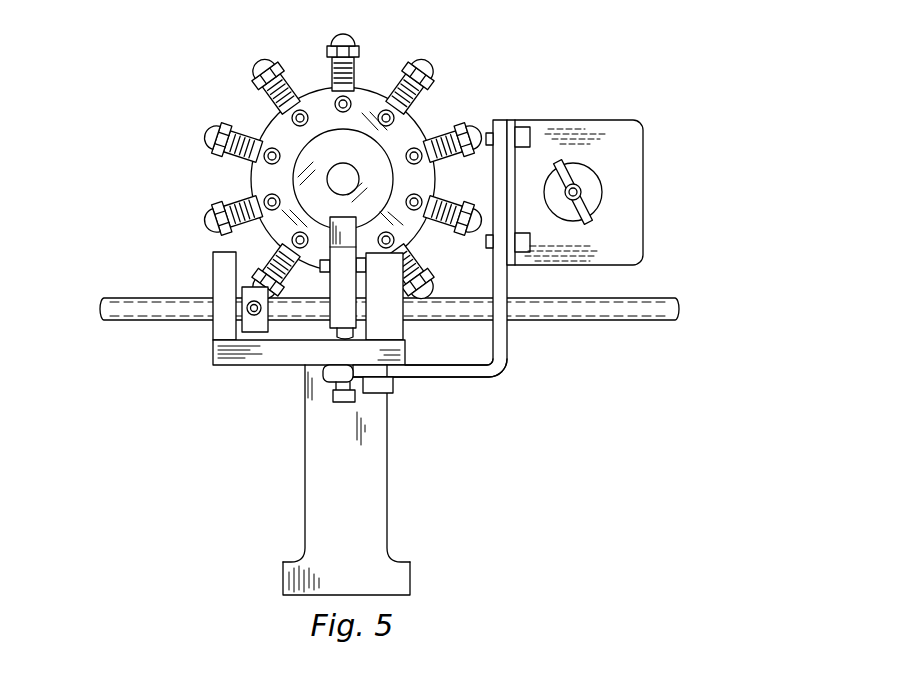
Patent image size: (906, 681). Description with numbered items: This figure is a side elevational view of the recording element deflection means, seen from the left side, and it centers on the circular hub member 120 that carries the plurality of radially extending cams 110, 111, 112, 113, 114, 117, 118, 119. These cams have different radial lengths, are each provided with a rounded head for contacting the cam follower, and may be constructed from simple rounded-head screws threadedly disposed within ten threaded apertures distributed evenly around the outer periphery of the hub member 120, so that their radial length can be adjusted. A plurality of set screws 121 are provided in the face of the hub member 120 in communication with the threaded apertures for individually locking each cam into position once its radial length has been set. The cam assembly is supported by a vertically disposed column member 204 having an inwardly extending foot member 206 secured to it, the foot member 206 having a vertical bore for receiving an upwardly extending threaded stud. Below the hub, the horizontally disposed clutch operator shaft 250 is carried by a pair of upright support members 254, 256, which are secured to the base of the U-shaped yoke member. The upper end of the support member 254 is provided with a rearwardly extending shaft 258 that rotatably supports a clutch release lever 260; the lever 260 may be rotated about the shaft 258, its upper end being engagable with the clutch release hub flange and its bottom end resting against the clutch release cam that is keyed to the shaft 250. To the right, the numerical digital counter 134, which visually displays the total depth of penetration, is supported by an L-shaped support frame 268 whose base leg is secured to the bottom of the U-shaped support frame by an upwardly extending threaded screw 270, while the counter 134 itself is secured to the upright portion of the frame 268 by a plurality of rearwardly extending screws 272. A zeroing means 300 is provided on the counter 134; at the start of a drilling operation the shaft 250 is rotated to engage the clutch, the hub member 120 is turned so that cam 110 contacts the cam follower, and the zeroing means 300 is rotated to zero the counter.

The radially extending cam 110 is at (340, 36).
The radially extending cam 111 is at (416, 62).
The radially extending cam 112 is at (466, 128).
The radially extending cam 113 is at (474, 213).
The radially extending cam 114 is at (428, 286).
The radially extending cam 117 is at (202, 222).
The radially extending cam 118 is at (202, 132).
The radially extending cam 119 is at (258, 63).
The circular hub member 120 is at (266, 120).
The set screw 121 is at (302, 110).
The numerical digital counter 134 is at (639, 121).
The column member 204 is at (318, 467).
The foot member 206 is at (288, 578).
The clutch operator shaft 250 is at (157, 322).
The upright support member 254 is at (405, 331).
The upright support member 256 is at (213, 276).
The rearwardly extending shaft 258 is at (318, 265).
The clutch release lever 260 is at (330, 222).
The L-shaped support frame 268 is at (477, 373).
The threaded screw 270 is at (390, 385).
The screw 272 is at (490, 118).
The zeroing means 300 is at (583, 196).